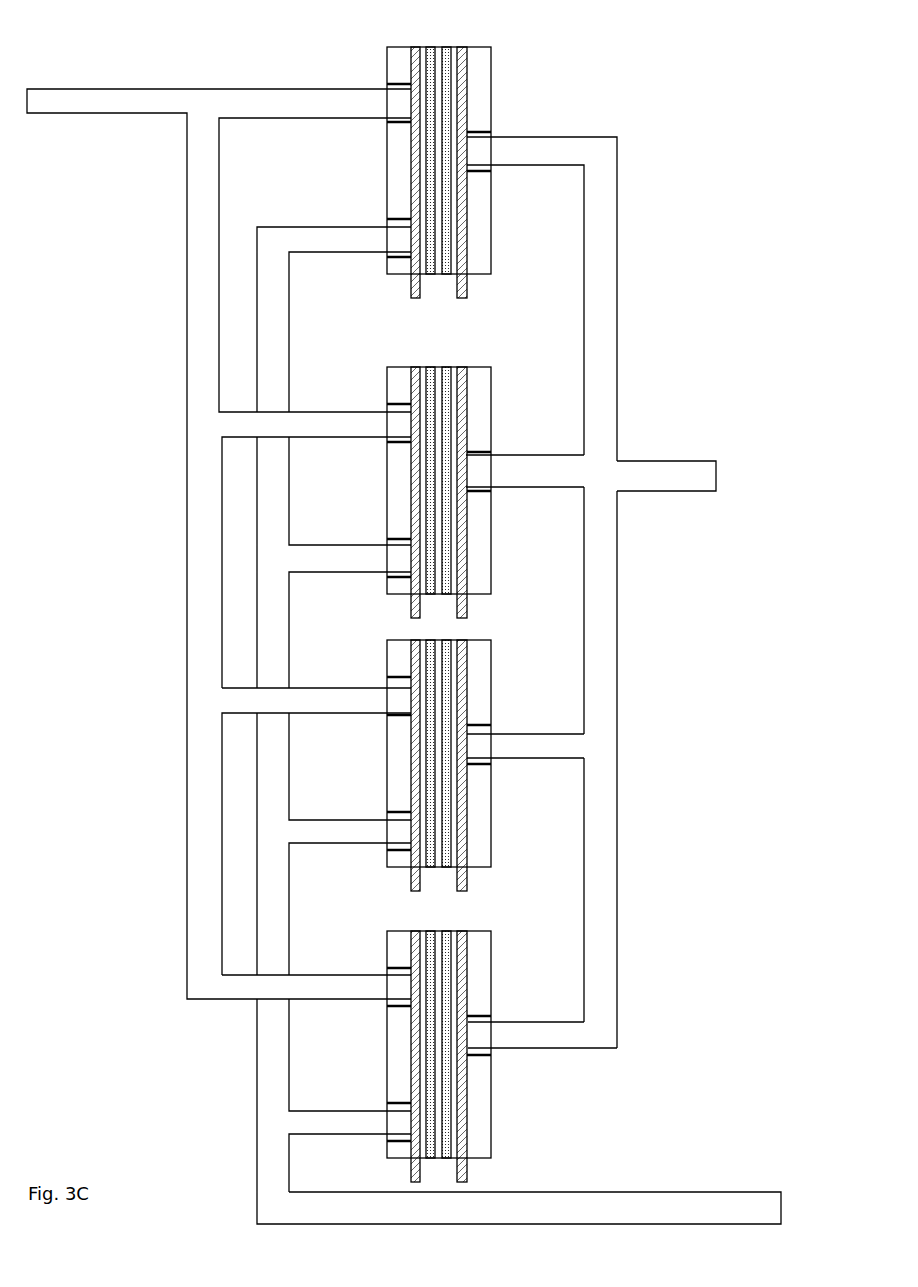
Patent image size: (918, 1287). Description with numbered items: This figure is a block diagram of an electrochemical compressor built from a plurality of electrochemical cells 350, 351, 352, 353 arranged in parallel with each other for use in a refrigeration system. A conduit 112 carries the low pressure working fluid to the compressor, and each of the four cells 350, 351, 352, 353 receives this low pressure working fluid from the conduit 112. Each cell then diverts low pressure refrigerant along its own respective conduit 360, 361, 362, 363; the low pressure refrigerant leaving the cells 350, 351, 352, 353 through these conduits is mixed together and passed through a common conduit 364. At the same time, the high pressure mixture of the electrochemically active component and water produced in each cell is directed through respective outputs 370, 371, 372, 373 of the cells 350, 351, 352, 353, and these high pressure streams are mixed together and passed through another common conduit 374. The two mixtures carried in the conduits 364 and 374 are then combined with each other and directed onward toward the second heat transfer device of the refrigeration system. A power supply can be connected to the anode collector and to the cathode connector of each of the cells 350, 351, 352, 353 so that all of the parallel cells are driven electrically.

The conduit 112 is at (111, 114).
The cell 350 is at (435, 32).
The cell 351 is at (434, 356).
The cell 352 is at (482, 627).
The cell 353 is at (464, 918).
The conduit 360 is at (354, 227).
The conduit 361 is at (352, 545).
The conduit 362 is at (348, 820).
The conduit 363 is at (349, 1111).
The conduit 364 is at (653, 1193).
The output 370 is at (512, 138).
The output 371 is at (518, 457).
The output 372 is at (553, 758).
The output 373 is at (513, 1050).
The conduit 374 is at (662, 491).